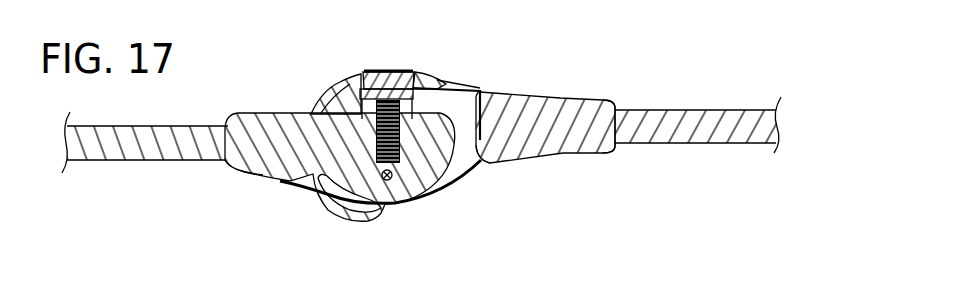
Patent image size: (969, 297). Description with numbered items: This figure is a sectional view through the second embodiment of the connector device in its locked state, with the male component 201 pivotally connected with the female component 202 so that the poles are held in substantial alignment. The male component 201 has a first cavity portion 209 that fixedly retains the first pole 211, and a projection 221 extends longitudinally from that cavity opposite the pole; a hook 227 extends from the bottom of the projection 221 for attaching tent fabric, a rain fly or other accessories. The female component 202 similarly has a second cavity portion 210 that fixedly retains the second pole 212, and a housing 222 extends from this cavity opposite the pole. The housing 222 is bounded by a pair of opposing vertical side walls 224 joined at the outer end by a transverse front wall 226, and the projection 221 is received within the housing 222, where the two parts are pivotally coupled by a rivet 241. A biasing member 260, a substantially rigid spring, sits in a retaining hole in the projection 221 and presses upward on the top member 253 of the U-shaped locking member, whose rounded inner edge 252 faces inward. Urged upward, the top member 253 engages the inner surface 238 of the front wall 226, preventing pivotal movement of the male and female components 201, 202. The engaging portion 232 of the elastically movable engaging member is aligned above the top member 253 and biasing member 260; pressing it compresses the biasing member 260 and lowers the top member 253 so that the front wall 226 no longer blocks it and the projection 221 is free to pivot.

The male component 201 is at (258, 131).
The female component 202 is at (530, 130).
The first cavity portion 209 is at (242, 160).
The second cavity portion 210 is at (582, 118).
The first pole 211 is at (170, 142).
The second pole 212 is at (638, 143).
The projection 221 is at (321, 168).
The housing 222 is at (440, 190).
The side walls 224 is at (463, 163).
The front wall 226 is at (327, 104).
The hook 227 is at (330, 208).
The engaging portion 232 is at (378, 70).
The inner surface 238 is at (363, 78).
The rivet 241 is at (393, 183).
The inner edge 252 is at (448, 83).
The top member 253 is at (412, 72).
The biasing member 260 is at (330, 129).